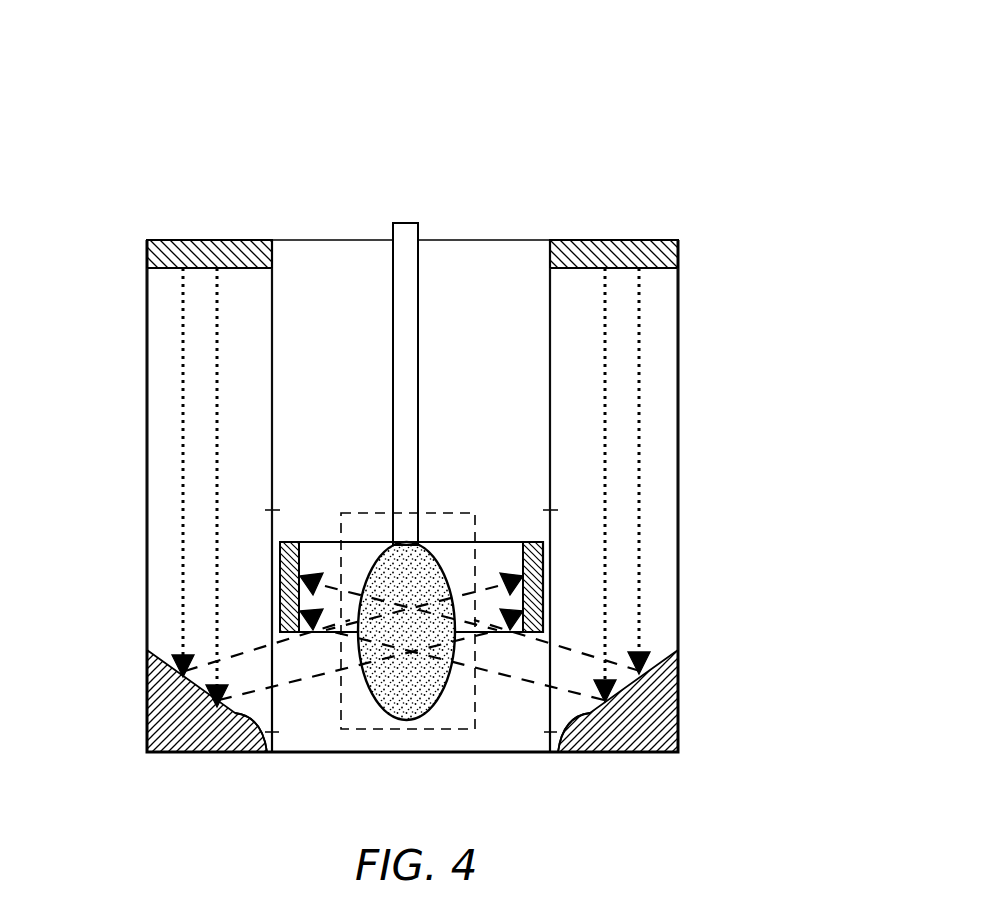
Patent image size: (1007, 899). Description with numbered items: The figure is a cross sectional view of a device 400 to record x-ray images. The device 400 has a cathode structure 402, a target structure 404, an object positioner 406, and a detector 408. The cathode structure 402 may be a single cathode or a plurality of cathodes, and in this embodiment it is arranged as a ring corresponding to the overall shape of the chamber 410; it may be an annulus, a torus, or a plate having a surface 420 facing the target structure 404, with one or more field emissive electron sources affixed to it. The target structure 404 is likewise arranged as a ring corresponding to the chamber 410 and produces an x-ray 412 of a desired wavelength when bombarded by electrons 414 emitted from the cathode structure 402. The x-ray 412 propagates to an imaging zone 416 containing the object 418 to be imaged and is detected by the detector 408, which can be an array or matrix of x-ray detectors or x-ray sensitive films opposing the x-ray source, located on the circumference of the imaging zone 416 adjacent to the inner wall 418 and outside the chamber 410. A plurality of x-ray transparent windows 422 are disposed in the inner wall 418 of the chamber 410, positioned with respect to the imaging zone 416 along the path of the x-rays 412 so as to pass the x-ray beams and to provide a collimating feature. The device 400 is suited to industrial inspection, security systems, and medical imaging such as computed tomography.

The device to record x-ray images 400 is at (574, 155).
The cathode structure 402 is at (203, 243).
The target structure 404 is at (176, 712).
The object positioner 406 is at (406, 228).
The detector 408 is at (536, 540).
The chamber 410 is at (164, 439).
The x-ray 412 is at (309, 679).
The electrons 414 is at (219, 438).
The imaging zone 416 is at (445, 512).
The inner wall 418 is at (273, 332).
The surface 420 is at (264, 753).
The x-ray transparent windows 422 is at (274, 531).